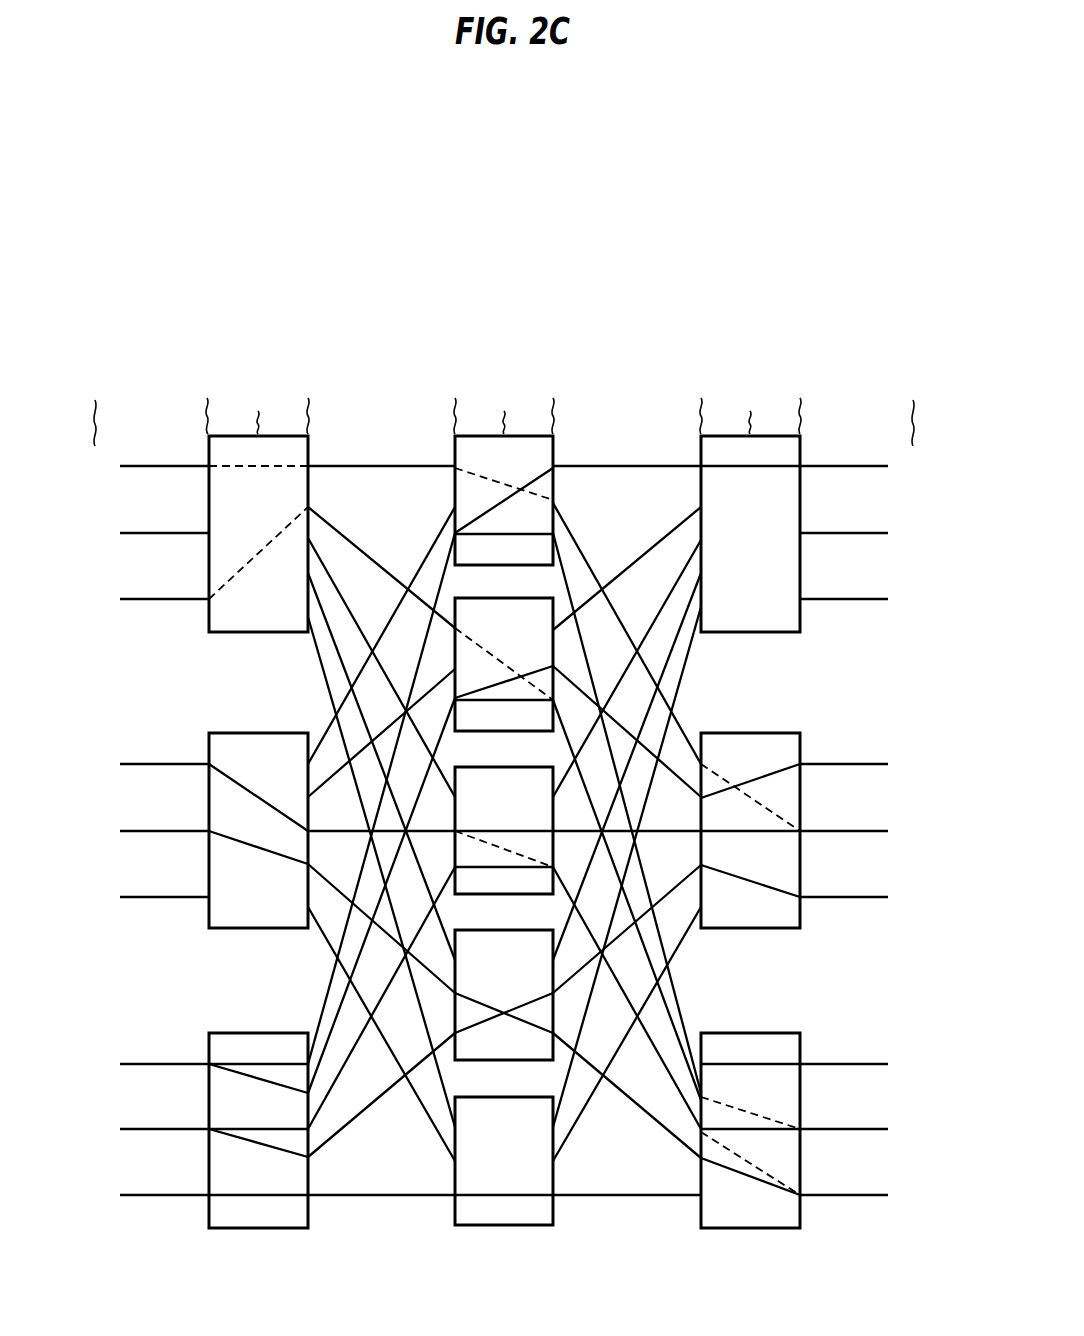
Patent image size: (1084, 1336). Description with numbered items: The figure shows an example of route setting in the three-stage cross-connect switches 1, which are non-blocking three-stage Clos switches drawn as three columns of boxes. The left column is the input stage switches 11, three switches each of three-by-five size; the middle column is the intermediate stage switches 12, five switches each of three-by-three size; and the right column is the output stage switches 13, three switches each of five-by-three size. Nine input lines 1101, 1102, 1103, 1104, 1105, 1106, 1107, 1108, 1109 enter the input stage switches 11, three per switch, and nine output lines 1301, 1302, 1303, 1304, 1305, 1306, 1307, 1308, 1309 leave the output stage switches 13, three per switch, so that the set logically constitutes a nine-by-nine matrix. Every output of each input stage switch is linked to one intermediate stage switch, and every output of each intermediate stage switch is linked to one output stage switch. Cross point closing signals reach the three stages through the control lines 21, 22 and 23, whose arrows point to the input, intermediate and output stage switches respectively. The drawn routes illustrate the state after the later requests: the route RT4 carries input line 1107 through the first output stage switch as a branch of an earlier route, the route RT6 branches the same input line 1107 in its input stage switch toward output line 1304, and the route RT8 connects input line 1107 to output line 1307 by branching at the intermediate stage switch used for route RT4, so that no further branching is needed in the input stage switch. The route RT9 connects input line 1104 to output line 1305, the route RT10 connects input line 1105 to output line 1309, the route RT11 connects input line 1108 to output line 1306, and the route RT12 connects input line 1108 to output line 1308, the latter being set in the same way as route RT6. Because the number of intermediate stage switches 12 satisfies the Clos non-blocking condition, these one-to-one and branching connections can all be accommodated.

The three-stage cross-connect switches 1 is at (343, 135).
The input stage switches 11 is at (258, 336).
The intermediate stage switches 12 is at (504, 336).
The output stage switches 13 is at (750, 336).
The control line 21 is at (258, 640).
The control line 22 is at (504, 573).
The control line 23 is at (750, 640).
The input line 1101 is at (198, 466).
The input line 1102 is at (198, 533).
The input line 1103 is at (198, 599).
The input line 1104 is at (198, 764).
The input line 1105 is at (198, 831).
The input line 1106 is at (198, 897).
The input line 1107 is at (198, 1064).
The input line 1108 is at (198, 1129).
The input line 1109 is at (198, 1195).
The output line 1301 is at (808, 466).
The output line 1302 is at (808, 533).
The output line 1303 is at (808, 599).
The output line 1304 is at (808, 764).
The output line 1305 is at (808, 831).
The output line 1306 is at (808, 897).
The output line 1307 is at (808, 1064).
The output line 1308 is at (808, 1129).
The output line 1309 is at (808, 1195).
The route RT4 is at (720, 466).
The route RT6 is at (676, 774).
The route RT8 is at (688, 1010).
The route RT9 is at (661, 830).
The route RT10 is at (632, 1105).
The route RT11 is at (350, 1121).
The route RT12 is at (642, 1040).